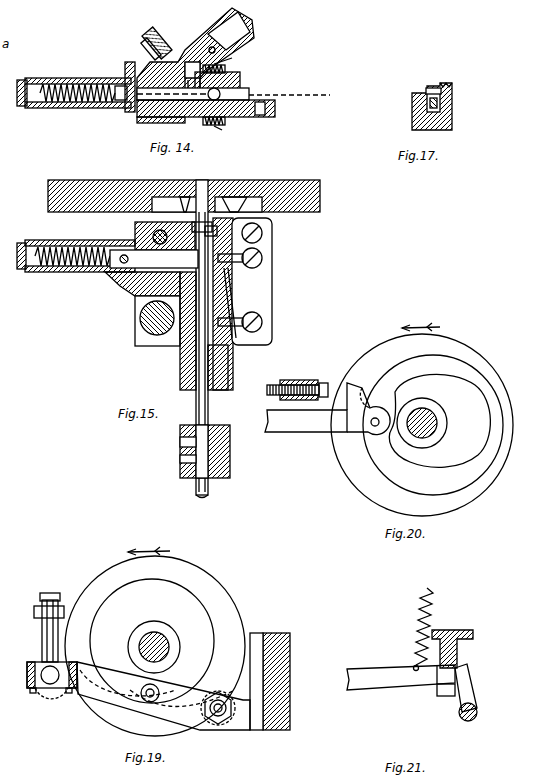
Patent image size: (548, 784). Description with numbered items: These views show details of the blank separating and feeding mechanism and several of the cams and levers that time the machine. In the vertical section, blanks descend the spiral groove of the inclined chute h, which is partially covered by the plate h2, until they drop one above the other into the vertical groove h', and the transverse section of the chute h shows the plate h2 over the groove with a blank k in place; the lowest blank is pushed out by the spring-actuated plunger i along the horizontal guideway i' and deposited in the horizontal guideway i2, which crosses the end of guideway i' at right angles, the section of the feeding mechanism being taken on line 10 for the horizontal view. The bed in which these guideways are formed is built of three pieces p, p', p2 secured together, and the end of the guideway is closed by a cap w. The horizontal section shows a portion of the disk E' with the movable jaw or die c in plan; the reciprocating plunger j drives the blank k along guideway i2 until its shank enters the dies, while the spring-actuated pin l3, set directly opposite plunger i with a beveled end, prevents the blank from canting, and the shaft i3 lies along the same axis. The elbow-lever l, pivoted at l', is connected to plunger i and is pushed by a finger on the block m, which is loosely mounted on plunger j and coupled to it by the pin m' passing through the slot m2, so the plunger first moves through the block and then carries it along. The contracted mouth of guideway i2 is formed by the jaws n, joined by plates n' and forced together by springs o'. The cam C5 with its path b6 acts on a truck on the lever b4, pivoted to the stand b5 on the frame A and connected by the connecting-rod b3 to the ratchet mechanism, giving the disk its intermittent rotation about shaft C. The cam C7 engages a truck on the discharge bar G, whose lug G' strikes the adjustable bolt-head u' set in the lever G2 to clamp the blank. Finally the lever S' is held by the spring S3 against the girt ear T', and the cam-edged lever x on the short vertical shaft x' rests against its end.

In FIG. 14, the end cap w is at (17, 93).
In FIG. 14, the frame piece p2 is at (80, 78).
In FIG. 15, the frame piece p2 is at (133, 309).
In FIG. 14, the elbow-lever l is at (121, 80).
In FIG. 14, the inclined chute h is at (195, 52).
In FIG. 17, the inclined chute h is at (437, 106).
In FIG. 14, the vertical groove h' is at (188, 80).
In FIG. 14, the plate h2 is at (229, 32).
In FIG. 17, the plate h2 is at (433, 88).
In FIG. 14, the frame piece p' is at (160, 38).
In FIG. 15, the frame piece p' is at (224, 302).
In FIG. 14, the horizontal guideway i2 is at (223, 80).
In FIG. 15, the horizontal guideway i2 is at (218, 238).
In FIG. 14, the plate n' is at (227, 96).
In FIG. 14, the spring o' is at (225, 94).
In FIG. 14, the shaft i3 is at (238, 93).
In FIG. 15, the spring-actuated pin l3 is at (262, 258).
In FIG. 14, the section line 10 is at (297, 95).
In FIG. 14, the frame piece p is at (205, 117).
In FIG. 15, the frame piece p is at (208, 331).
In FIG. 14, the horizontal guideway i' is at (161, 127).
In FIG. 17, the blank k is at (429, 104).
In FIG. 15, the blank k is at (234, 288).
In FIG. 15, the disk E' is at (184, 187).
In FIG. 15, the movable jaw or die c is at (207, 205).
In FIG. 15, the reciprocating plunger j is at (209, 408).
In FIG. 15, the jaw n is at (196, 223).
In FIG. 15, the spring housing q is at (68, 256).
In FIG. 15, the spring-actuated plunger i is at (154, 259).
In FIG. 15, the pivot l' is at (146, 318).
In FIG. 15, the block m is at (213, 451).
In FIG. 15, the slot m2 is at (182, 448).
In FIG. 15, the pin m' is at (176, 462).
In FIG. 20, the cam C7 is at (422, 419).
In FIG. 20, the cam shaft C is at (422, 423).
In FIG. 19, the cam shaft C is at (154, 647).
In FIG. 20, the discharge bar or rod G is at (306, 421).
In FIG. 20, the upwardly-projecting lug G' is at (368, 409).
In FIG. 20, the lever G2 is at (302, 380).
In FIG. 20, the adjustable bolt-head u' is at (329, 384).
In FIG. 19, the cam C5 is at (155, 641).
In FIG. 19, the path b6 is at (152, 641).
In FIG. 19, the frame A is at (276, 681).
In FIG. 19, the lever b4 is at (120, 686).
In FIG. 19, the stand b5 is at (230, 702).
In FIG. 19, the connecting-rod b3 is at (52, 646).
In FIG. 21, the lever S' is at (401, 677).
In FIG. 21, the spring S3 is at (418, 618).
In FIG. 21, the stop T' is at (452, 649).
In FIG. 21, the lever x is at (457, 688).
In FIG. 21, the short vertical shaft x' is at (477, 713).